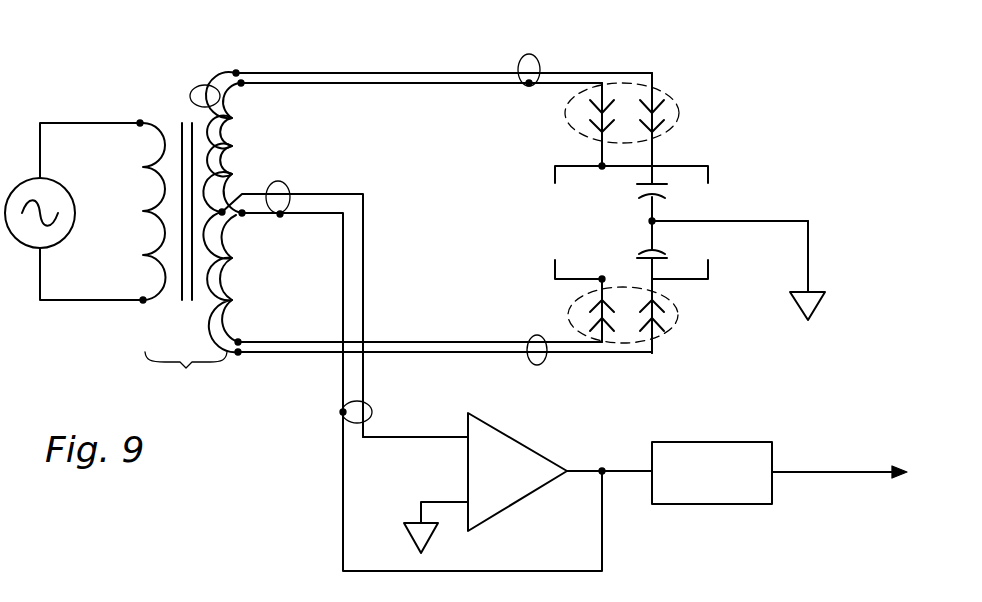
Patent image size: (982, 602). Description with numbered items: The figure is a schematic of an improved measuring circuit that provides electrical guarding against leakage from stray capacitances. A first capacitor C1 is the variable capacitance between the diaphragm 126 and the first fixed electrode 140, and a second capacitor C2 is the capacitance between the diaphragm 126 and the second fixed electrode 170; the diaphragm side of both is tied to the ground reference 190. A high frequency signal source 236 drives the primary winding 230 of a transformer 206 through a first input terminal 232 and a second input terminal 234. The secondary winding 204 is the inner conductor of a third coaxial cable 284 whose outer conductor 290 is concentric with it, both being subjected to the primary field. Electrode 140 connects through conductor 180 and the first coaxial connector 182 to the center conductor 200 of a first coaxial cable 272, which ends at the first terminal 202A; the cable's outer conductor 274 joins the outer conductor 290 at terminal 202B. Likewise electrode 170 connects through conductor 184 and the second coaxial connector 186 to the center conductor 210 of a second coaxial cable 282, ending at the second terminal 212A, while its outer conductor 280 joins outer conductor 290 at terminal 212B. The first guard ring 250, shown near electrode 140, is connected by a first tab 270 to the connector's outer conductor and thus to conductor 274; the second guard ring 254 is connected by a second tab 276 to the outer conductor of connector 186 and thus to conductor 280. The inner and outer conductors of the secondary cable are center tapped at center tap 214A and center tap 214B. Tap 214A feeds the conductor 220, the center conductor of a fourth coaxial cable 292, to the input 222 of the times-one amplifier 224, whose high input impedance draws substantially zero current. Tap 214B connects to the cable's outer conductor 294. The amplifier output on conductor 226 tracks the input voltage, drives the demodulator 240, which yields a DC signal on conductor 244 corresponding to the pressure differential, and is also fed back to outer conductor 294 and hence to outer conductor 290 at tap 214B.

The diaphragm 126 is at (648, 219).
The first fixed electrode 140 is at (658, 181).
The second fixed electrode 170 is at (648, 255).
The conductor 180 is at (656, 140).
The first coaxial connector 182 is at (688, 100).
The conductor 184 is at (680, 310).
The second coaxial connector 186 is at (566, 318).
The ground reference 190 is at (818, 290).
The center conductor 200 is at (460, 72).
The first terminal 202A is at (238, 72).
The first terminal 202B is at (243, 85).
The secondary winding 204 is at (223, 143).
The transformer 206 is at (186, 374).
The center conductor 210 is at (612, 355).
The second terminal 212A is at (242, 354).
The second terminal 212B is at (242, 341).
The center tap 214A is at (226, 210).
The center tap 214B is at (246, 215).
The conductor 220 is at (366, 374).
The input 222 is at (458, 441).
The amplifier 224 is at (520, 504).
The electrical conductor 226 is at (610, 470).
The primary winding 230 is at (155, 122).
The first input terminal 232 is at (138, 123).
The second input terminal 234 is at (142, 302).
The high frequency signal source 236 is at (62, 188).
The demodulator 240 is at (712, 505).
The conductor 244 is at (826, 476).
The first guard ring 250 is at (552, 178).
The second guard ring 254 is at (710, 282).
The first tab 270 is at (596, 147).
The first coaxial cable 272 is at (546, 57).
The concentric outer conductor 274 is at (433, 84).
The second tab 276 is at (590, 294).
The concentric outer conductor 280 is at (422, 340).
The second coaxial cable 282 is at (540, 367).
The third coaxial cable 284 is at (203, 82).
The outer conductor 290 is at (225, 286).
The fourth coaxial cable 292 is at (295, 186).
The outer conductor 294 is at (338, 402).
The first capacitor C1 is at (676, 193).
The second capacitor C2 is at (676, 251).